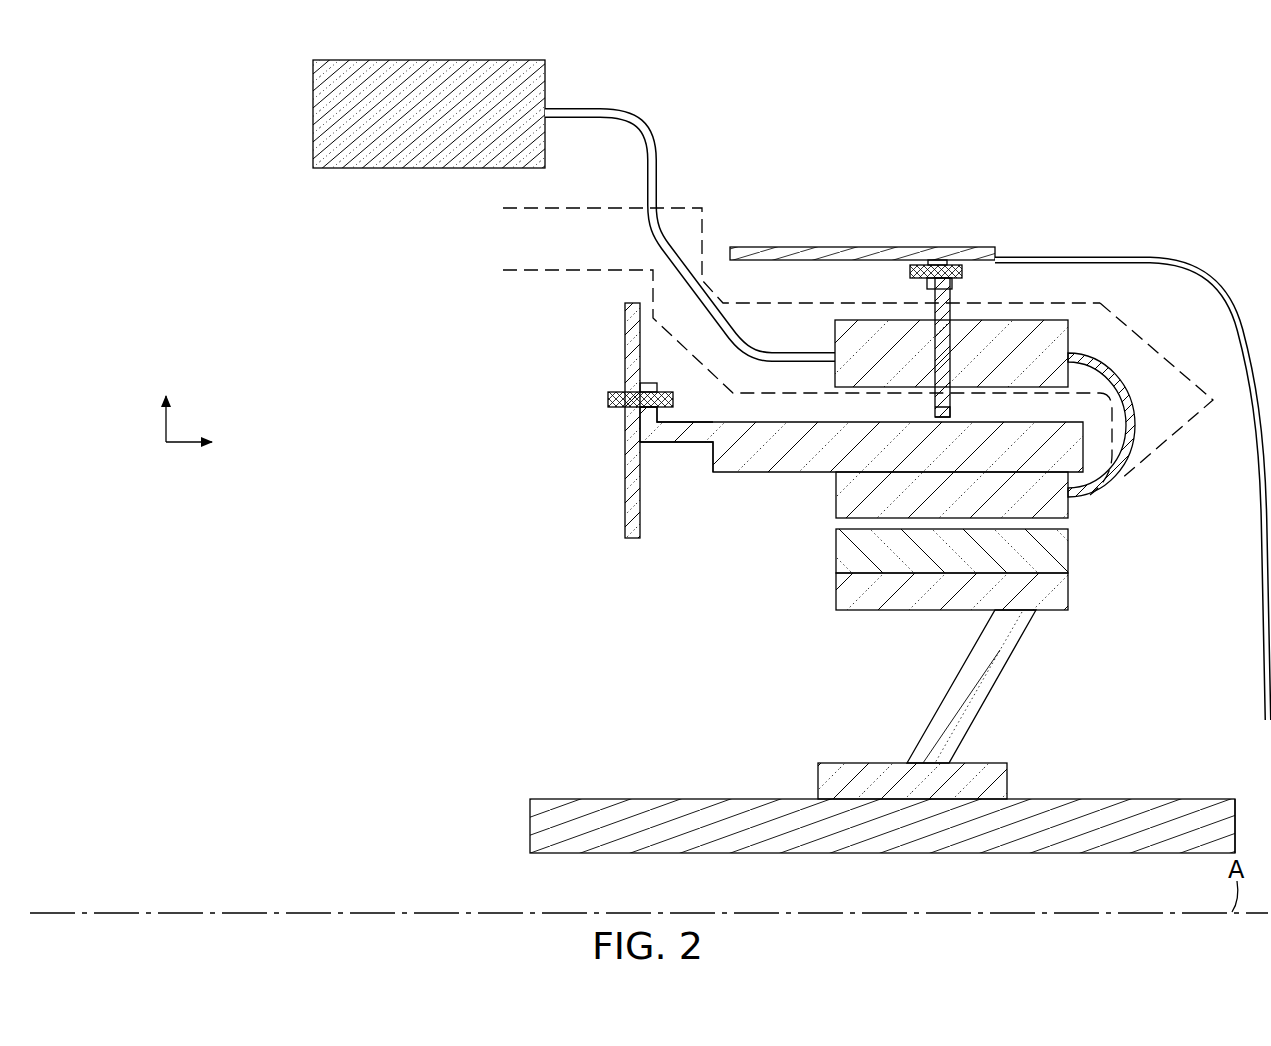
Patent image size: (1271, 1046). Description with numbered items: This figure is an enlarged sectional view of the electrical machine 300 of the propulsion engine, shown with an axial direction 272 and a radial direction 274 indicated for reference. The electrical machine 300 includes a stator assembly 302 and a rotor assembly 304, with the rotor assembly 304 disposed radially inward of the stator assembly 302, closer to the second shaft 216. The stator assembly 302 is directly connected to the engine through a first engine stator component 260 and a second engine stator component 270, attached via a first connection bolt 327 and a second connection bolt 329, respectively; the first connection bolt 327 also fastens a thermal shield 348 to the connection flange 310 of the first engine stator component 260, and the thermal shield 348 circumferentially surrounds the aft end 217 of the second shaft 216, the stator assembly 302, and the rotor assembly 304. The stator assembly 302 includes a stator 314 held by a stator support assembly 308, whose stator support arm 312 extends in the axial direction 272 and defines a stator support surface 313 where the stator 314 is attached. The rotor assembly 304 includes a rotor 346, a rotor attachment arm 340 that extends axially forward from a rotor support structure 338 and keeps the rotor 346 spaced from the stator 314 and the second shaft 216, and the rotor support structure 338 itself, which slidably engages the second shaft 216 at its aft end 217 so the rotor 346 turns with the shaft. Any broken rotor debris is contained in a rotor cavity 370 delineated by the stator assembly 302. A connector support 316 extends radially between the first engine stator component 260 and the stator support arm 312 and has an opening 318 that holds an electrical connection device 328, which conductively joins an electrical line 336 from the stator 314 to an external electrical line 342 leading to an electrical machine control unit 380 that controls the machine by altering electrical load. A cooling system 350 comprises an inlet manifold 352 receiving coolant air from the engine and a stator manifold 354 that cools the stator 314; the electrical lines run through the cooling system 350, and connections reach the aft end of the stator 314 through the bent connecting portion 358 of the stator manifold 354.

The electrical machine 300 is at (1112, 125).
The electrical machine control unit 380 is at (313, 109).
The external electrical line 342 is at (598, 108).
The inlet manifold 352 is at (600, 207).
The connecting portion 358 is at (1155, 330).
The stator manifold 354 is at (652, 292).
The stator assembly 302 is at (687, 340).
The second engine stator component 270 is at (628, 346).
The second connection bolt 329 is at (612, 401).
The stator support arm 312 is at (958, 459).
The stator support surface 313 is at (812, 474).
The stator 314 is at (978, 506).
The electrical connection device 328 is at (835, 334).
The opening 318 is at (858, 315).
The first engine stator component 260 is at (862, 246).
The connection flange 310 is at (943, 260).
The first connection bolt 327 is at (912, 270).
The stator support assembly 308 is at (968, 365).
The connector support 316 is at (953, 407).
The electrical line 336 is at (1135, 445).
The thermal shield 348 is at (1192, 258).
The rotor cavity 370 is at (817, 582).
The rotor 346 is at (1063, 548).
The rotor attachment arm 340 is at (925, 612).
The rotor assembly 304 is at (1082, 597).
The rotor support structure 338 is at (995, 676).
The second shaft 216 is at (530, 824).
The aft end 217 is at (1235, 822).
The cooling system 350 is at (672, 586).
The vertical axis 274 is at (166, 420).
The axial direction 272 is at (190, 442).